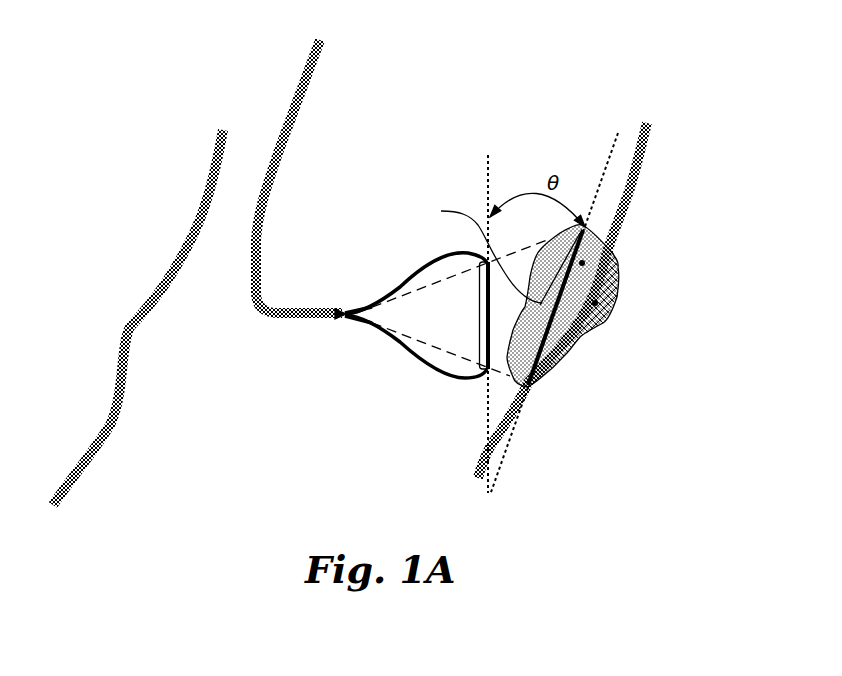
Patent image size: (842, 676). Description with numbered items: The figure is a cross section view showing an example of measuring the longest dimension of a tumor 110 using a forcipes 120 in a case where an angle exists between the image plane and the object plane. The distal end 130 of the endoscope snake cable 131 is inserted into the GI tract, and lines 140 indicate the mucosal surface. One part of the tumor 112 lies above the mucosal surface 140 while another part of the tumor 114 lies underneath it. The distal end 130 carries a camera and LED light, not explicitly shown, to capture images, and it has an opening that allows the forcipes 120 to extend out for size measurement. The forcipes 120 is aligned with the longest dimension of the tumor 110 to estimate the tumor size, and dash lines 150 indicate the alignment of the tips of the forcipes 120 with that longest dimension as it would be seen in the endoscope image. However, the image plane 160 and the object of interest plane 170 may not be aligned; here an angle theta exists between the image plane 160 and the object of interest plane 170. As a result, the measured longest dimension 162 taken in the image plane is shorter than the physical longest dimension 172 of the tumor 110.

The tumor 110 is at (599, 305).
The part of the tumor above the mucosal surface 112 is at (585, 262).
The part of the tumor underneath the mucosal surface 114 is at (598, 303).
The forcipes 120 is at (430, 258).
The distal end 130 is at (342, 318).
The endoscope snake cable 131 is at (297, 103).
The mucosal surface 140 is at (200, 208).
The dash lines 150 is at (369, 305).
The image plane 160 is at (485, 168).
The measured longest dimension 162 is at (478, 317).
The object of interest plane 170 is at (607, 162).
The physical longest dimension 172 is at (471, 254).